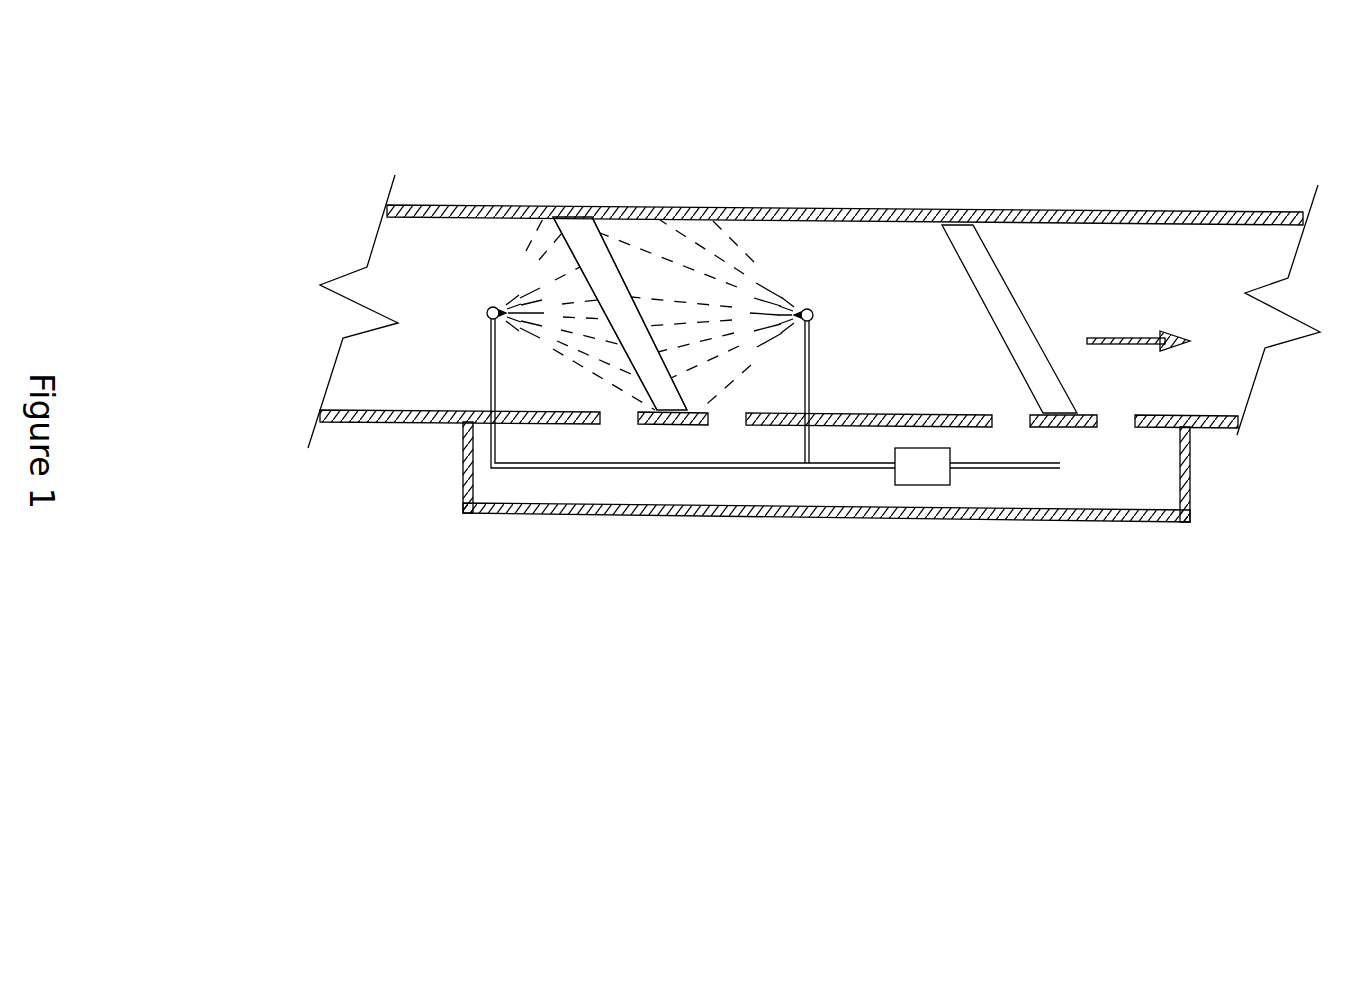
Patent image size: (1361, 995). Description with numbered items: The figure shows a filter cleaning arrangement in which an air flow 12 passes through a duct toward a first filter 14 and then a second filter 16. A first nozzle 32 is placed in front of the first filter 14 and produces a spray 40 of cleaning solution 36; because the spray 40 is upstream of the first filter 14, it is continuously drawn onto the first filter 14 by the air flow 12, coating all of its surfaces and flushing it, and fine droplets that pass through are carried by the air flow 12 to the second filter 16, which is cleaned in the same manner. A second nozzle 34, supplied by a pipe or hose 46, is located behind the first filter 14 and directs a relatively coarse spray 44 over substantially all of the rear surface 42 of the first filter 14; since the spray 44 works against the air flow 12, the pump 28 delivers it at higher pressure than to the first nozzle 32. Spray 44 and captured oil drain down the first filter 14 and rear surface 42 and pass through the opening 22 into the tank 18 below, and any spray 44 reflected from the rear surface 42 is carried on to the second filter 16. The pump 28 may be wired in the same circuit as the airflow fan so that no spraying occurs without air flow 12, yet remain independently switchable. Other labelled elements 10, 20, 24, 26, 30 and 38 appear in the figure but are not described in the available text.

The duct/apparatus 10 is at (398, 428).
The air flow 12 is at (1147, 333).
The first filter 14 is at (587, 247).
The second filter 16 is at (997, 283).
The tank 18 is at (522, 520).
The first drain opening 20 is at (622, 417).
The opening 22 is at (729, 425).
The third drain opening 24 is at (1013, 428).
The fourth drain opening 26 is at (1229, 544).
The pump 28 is at (922, 490).
The supply pipe 30 is at (785, 467).
The first nozzle 32 is at (382, 220).
The second nozzle 34 is at (807, 309).
The cleaning solution 36 is at (668, 488).
The upstream surface of baffle 38 is at (585, 266).
The spray 40 is at (525, 266).
The rear surface 42 is at (625, 288).
The spray 44 is at (712, 277).
The pipe or hose 46 is at (874, 292).